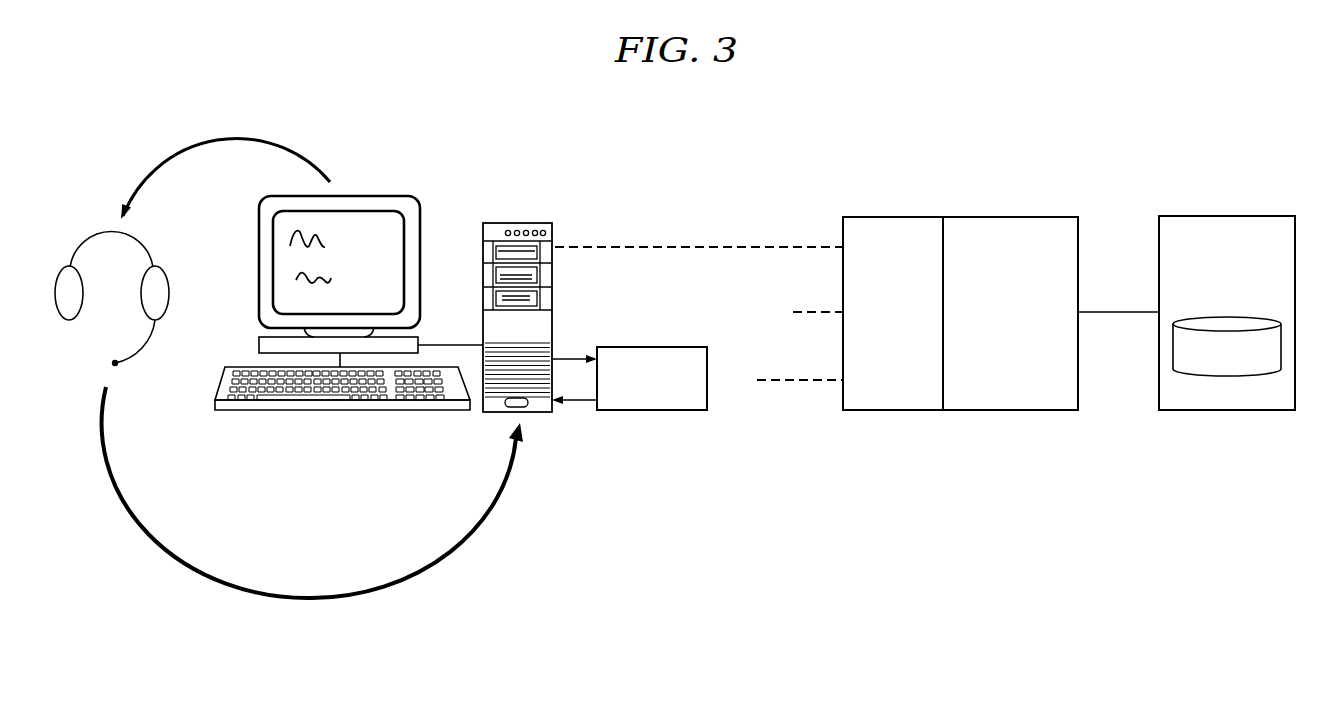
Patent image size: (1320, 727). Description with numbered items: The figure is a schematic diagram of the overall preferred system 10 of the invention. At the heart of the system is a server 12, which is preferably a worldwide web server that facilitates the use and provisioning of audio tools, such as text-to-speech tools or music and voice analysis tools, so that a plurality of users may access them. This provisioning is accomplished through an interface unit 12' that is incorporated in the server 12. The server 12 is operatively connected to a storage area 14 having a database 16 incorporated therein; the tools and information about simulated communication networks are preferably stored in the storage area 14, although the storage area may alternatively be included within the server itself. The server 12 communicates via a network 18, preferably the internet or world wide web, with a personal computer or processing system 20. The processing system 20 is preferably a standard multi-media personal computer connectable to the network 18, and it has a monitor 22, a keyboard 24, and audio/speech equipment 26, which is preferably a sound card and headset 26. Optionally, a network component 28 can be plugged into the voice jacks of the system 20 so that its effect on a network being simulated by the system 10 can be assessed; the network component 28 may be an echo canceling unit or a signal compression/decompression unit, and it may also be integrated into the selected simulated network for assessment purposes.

The system 10 is at (720, 150).
The server 12 is at (1001, 292).
The interface unit 12' is at (896, 292).
The storage area 14 is at (1215, 216).
The database 16 is at (1222, 323).
The network 18 is at (672, 247).
The personal computer 20 is at (508, 223).
The monitor 22 is at (376, 196).
The keyboard 24 is at (297, 411).
The audio/speech equipment 26 is at (122, 296).
The network component 28 is at (640, 347).